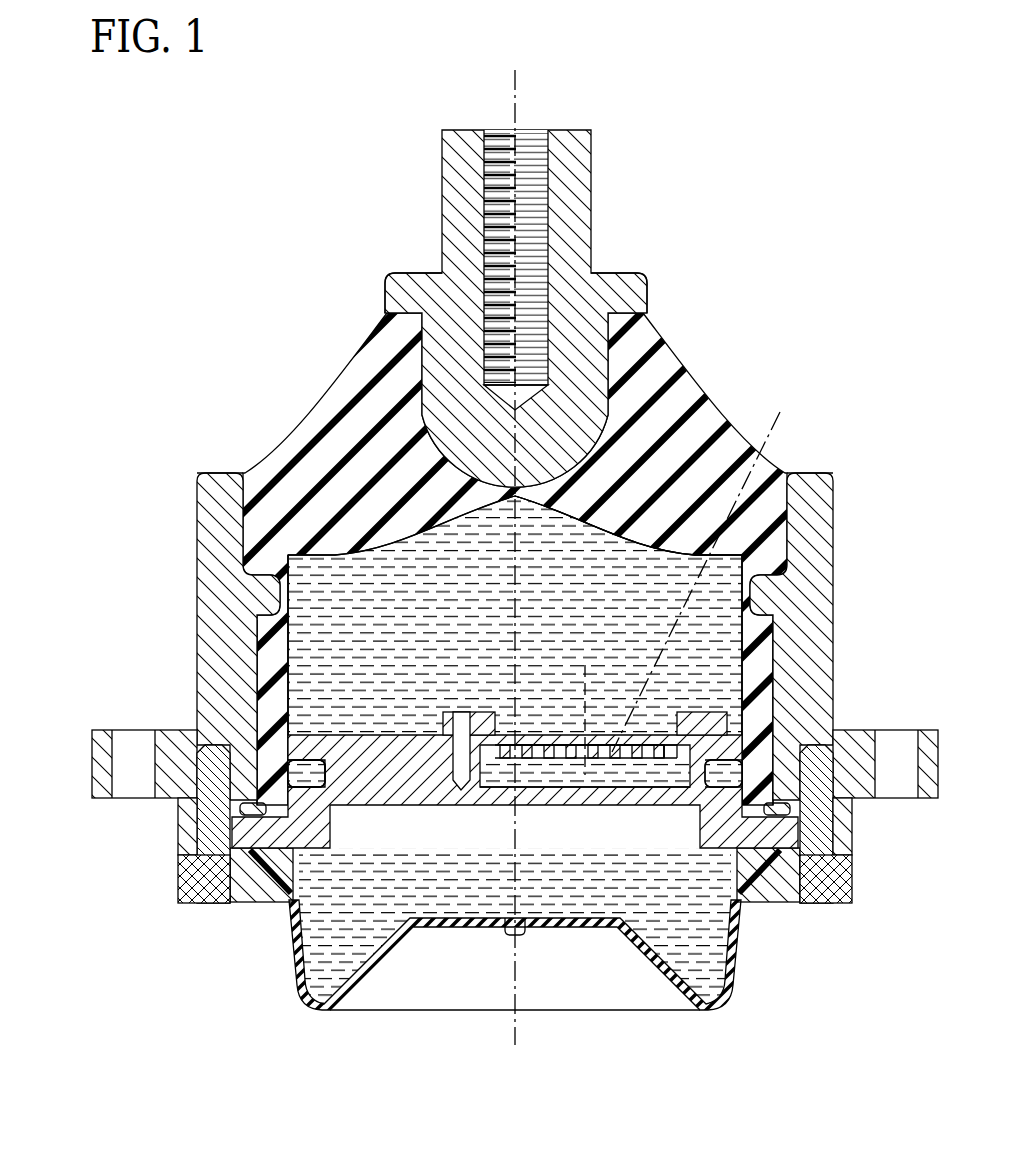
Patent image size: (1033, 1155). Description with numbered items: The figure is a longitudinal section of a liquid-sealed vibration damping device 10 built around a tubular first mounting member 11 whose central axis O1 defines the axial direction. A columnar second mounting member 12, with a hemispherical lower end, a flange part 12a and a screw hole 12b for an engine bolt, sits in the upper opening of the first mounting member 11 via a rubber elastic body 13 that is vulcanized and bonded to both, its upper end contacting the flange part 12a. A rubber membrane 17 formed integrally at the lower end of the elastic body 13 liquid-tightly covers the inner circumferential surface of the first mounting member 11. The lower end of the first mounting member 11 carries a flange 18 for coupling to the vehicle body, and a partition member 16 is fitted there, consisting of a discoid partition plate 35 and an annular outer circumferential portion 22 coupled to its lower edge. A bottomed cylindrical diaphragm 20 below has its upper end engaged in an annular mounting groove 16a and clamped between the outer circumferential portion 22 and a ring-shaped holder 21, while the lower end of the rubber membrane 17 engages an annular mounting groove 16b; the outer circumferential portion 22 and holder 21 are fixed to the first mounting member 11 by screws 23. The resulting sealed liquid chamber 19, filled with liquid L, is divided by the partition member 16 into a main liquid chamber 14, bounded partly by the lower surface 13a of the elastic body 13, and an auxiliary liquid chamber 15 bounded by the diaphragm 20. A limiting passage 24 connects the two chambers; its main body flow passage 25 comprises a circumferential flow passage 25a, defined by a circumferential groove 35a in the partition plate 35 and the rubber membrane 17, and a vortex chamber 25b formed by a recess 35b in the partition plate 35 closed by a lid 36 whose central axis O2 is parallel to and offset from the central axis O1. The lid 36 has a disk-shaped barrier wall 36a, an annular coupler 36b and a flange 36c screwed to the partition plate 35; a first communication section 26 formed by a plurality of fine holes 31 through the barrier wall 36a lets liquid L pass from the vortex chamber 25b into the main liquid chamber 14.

The vibration damping device 10 is at (810, 118).
The first mounting member 11 is at (848, 710).
The second mounting member 12 is at (572, 308).
The flange part 12a is at (640, 292).
The screw hole 12b is at (545, 232).
The elastic body 13 is at (700, 422).
The lower surface of the elastic body 13a is at (612, 548).
The main liquid chamber 14 is at (486, 635).
The auxiliary liquid chamber 15 is at (486, 880).
The partition member 16 is at (472, 730).
The annular mounting groove 16a is at (255, 842).
The annular mounting groove 16b is at (253, 808).
The rubber membrane 17 is at (276, 655).
The flange 18 is at (100, 762).
The liquid chamber 19 is at (360, 608).
The diaphragm 20 is at (465, 928).
The holder 21 is at (183, 893).
The outer circumferential portion 22 is at (185, 820).
The screws 23 is at (208, 867).
The limiting passage 24 is at (723, 773).
The main body flow passage 25 is at (319, 935).
The circumferential flow passage 25a is at (302, 790).
The vortex chamber 25b is at (548, 775).
The first communication section 26 is at (893, 405).
The fine holes 31 is at (628, 745).
The partition plate 35 is at (522, 754).
The circumferential groove 35a is at (313, 768).
The recess 35b is at (620, 775).
The lid 36 is at (658, 703).
The barrier wall 36a is at (664, 765).
The coupler 36b is at (692, 748).
The flange 36c is at (727, 725).
The liquid L is at (590, 688).
The central axis O1 is at (515, 97).
The central axis of the vortex chamber O2 is at (717, 565).